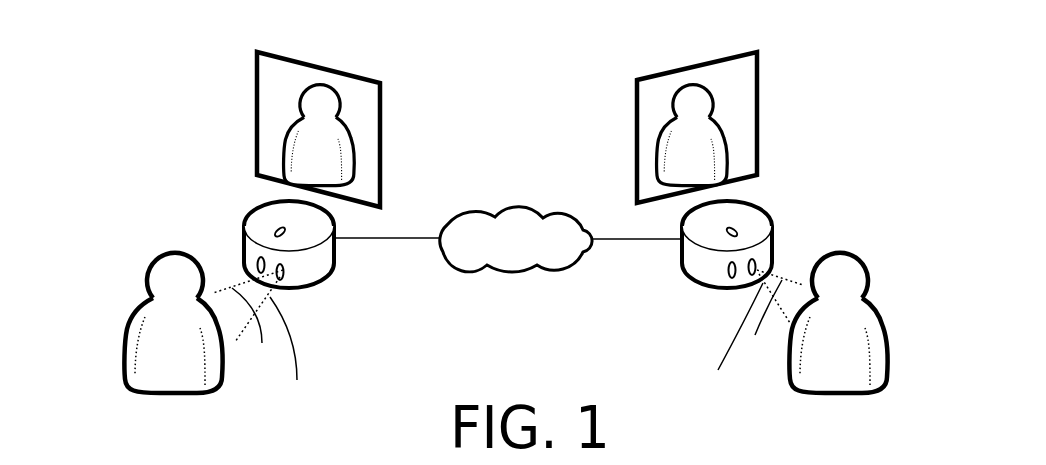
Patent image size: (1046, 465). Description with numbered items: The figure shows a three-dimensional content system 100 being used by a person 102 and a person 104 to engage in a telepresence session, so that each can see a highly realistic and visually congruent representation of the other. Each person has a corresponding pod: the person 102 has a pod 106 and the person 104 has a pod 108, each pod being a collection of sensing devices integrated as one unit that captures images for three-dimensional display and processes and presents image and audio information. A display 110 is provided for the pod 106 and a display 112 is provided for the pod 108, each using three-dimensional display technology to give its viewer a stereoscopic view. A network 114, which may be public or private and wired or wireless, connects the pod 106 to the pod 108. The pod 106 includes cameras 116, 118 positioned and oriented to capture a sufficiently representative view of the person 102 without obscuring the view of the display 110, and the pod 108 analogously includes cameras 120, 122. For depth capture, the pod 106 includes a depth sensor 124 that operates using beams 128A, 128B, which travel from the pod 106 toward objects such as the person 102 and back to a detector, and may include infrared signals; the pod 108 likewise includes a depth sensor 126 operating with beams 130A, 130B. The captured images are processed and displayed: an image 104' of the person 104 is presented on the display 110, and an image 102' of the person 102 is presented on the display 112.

The 3D content system 100 is at (902, 31).
The person 102 is at (160, 315).
The person 104 is at (855, 323).
The 3D image 102' is at (654, 135).
The 3D image 104' is at (353, 123).
The pod 106 is at (300, 288).
The pod 108 is at (710, 287).
The 3D display 110 is at (342, 72).
The 3D display 112 is at (747, 50).
The network 114 is at (535, 248).
The camera 116 is at (257, 261).
The camera 118 is at (277, 227).
The camera 120 is at (733, 279).
The camera 122 is at (727, 230).
The depth sensor 124 is at (284, 272).
The depth sensor 126 is at (754, 259).
The beam 128A is at (250, 323).
The beam 128B is at (294, 353).
The beam 130A is at (767, 319).
The beam 130B is at (728, 343).